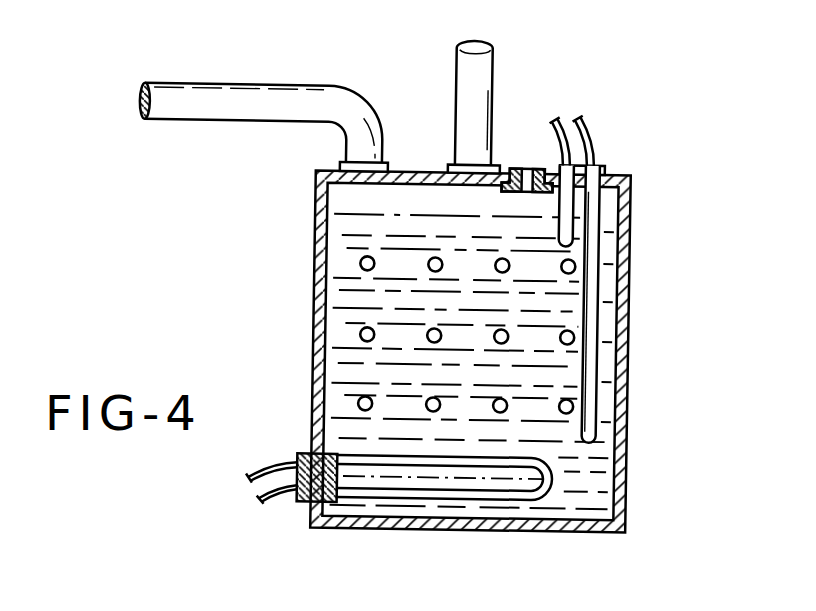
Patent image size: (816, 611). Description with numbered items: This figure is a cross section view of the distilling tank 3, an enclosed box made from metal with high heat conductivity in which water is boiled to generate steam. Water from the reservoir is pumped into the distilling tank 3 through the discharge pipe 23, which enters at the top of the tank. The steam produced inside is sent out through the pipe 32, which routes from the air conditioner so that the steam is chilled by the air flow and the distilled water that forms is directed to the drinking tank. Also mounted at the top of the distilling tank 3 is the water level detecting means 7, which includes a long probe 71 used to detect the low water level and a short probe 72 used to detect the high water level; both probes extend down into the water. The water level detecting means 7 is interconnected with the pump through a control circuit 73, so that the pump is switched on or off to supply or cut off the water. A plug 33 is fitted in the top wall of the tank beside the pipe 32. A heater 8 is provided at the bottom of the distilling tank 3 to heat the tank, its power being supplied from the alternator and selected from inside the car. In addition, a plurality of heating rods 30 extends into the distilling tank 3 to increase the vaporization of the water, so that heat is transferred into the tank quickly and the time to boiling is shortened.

The distilling tank 3 is at (617, 419).
The water level detecting means 7 is at (600, 171).
The heater 8 is at (436, 500).
The discharge pipe 23 is at (213, 107).
The heating rods 30 is at (571, 332).
The pipe 32 is at (466, 108).
The plug 33 is at (511, 167).
The long probe 71 is at (589, 372).
The short probe 72 is at (565, 211).
The control circuit 73 is at (580, 128).